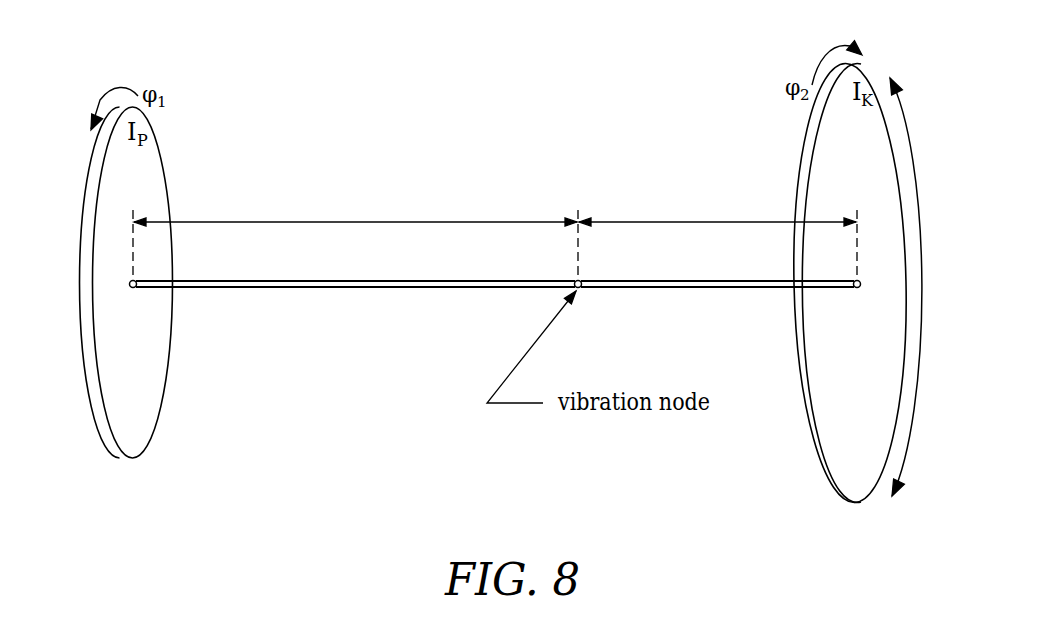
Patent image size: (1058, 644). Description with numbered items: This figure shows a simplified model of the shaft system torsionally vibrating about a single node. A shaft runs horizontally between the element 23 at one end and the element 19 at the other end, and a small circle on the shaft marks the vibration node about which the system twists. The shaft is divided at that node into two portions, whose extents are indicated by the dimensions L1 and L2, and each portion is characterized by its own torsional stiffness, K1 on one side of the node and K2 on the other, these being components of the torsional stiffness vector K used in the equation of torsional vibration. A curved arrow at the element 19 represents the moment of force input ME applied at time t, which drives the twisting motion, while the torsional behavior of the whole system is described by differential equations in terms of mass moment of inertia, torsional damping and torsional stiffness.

The propeller 23 is at (99, 195).
The engine 19 is at (893, 130).
The torsional stiffness K1 is at (353, 264).
The torsional stiffness K2 is at (721, 264).
The length L1 is at (355, 232).
The length L2 is at (718, 232).
The moment of force input ME is at (924, 287).